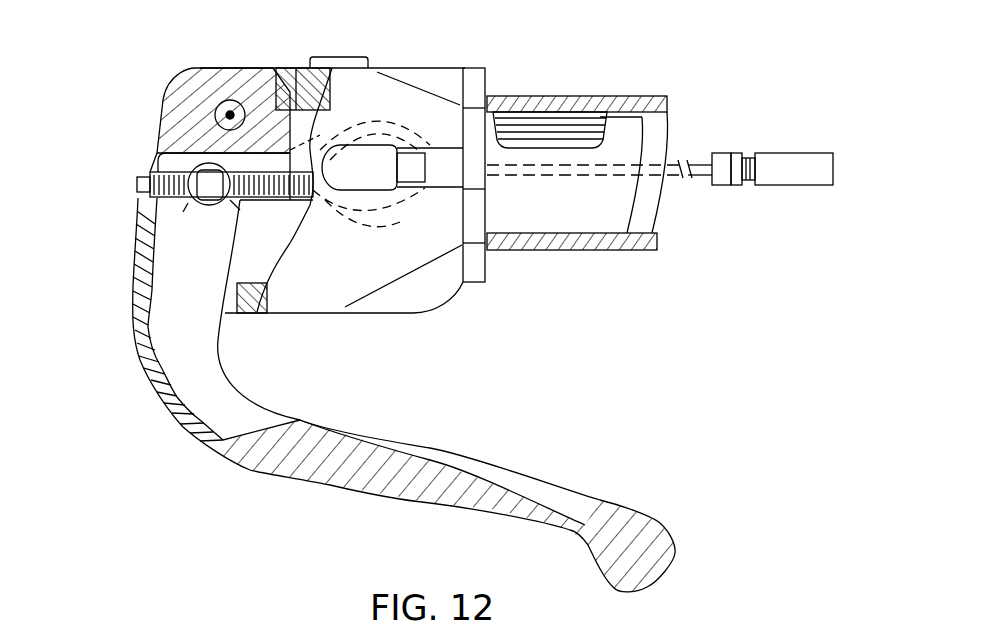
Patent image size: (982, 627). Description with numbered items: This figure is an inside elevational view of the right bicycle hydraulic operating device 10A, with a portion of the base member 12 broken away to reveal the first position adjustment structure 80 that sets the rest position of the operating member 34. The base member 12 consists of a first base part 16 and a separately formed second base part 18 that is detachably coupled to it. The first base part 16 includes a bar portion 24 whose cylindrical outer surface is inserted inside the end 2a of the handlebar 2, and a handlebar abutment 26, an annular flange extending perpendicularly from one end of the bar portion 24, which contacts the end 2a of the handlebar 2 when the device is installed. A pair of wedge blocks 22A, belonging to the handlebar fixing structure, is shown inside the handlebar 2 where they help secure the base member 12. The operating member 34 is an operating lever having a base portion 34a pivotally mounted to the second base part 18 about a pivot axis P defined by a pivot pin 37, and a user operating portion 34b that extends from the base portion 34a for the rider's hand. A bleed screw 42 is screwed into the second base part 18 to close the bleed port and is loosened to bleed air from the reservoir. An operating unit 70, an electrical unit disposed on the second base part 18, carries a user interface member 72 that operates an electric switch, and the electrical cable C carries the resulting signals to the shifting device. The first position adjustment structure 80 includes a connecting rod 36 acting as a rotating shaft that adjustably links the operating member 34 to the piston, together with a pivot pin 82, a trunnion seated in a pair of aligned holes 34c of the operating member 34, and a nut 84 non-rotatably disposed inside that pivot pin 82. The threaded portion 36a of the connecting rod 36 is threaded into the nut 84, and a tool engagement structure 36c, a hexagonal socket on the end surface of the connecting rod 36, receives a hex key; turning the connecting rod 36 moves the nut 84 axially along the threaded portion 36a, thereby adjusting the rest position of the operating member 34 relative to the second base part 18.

The bicycle hydraulic operating device 10A is at (143, 58).
The base member 12 is at (586, 28).
The first base part 16 is at (622, 110).
The second base part 18 is at (455, 67).
The handlebar 2 is at (651, 95).
The end of the handlebar 2a is at (515, 252).
The wedge blocks 22A is at (555, 130).
The bar portion 24 is at (598, 210).
The handlebar abutment 26 is at (475, 283).
The operating member 34 is at (262, 475).
The base portion 34a is at (160, 110).
The user operating portion 34b is at (510, 472).
The aligned holes 34c is at (207, 205).
The connecting rod 36 is at (290, 243).
The threaded portion 36a is at (275, 202).
The tool engagement structure 36c is at (137, 185).
The pivot pin 37 is at (242, 103).
The pivot axis P is at (231, 100).
The bleed screw 42 is at (338, 57).
The operating unit 70 is at (358, 254).
The user interface member 72 is at (373, 173).
The first position adjustment structure 80 is at (178, 228).
The pivot pin 82 is at (195, 203).
The nut 84 is at (210, 178).
The electrical cable C is at (700, 182).